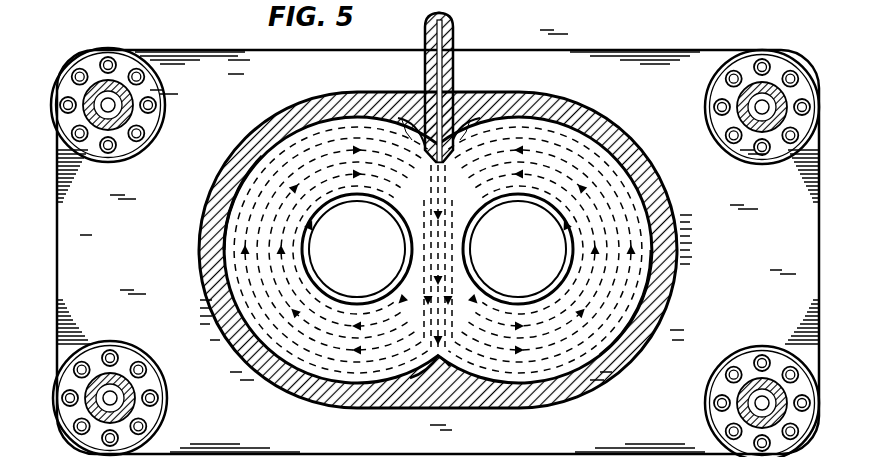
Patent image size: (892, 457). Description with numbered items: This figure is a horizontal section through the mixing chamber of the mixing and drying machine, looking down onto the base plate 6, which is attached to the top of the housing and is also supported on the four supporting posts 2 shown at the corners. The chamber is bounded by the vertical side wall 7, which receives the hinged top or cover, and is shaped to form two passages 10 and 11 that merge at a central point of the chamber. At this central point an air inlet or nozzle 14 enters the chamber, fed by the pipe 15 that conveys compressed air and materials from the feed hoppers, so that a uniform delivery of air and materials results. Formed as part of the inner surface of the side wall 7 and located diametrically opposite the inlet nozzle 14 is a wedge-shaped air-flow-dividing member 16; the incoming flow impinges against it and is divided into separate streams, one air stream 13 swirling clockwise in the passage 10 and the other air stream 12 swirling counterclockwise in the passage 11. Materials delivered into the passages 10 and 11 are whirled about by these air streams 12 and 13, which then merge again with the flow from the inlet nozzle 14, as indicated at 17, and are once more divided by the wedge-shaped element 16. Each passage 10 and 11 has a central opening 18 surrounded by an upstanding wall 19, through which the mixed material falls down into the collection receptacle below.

The supporting posts 2 is at (133, 101).
The base plate 6 is at (438, 242).
The side wall 7 is at (676, 231).
The passage 10 is at (228, 213).
The passage 11 is at (588, 360).
The air stream 12 is at (610, 192).
The air stream 13 is at (252, 257).
The air inlet or nozzle 14 is at (424, 146).
The pipe 15 is at (455, 25).
The wedge-shaped air-flow-dividing member 16 is at (437, 362).
The merging air flow 17 is at (438, 226).
The central opening 18 is at (437, 249).
The upstanding wall 19 is at (355, 202).